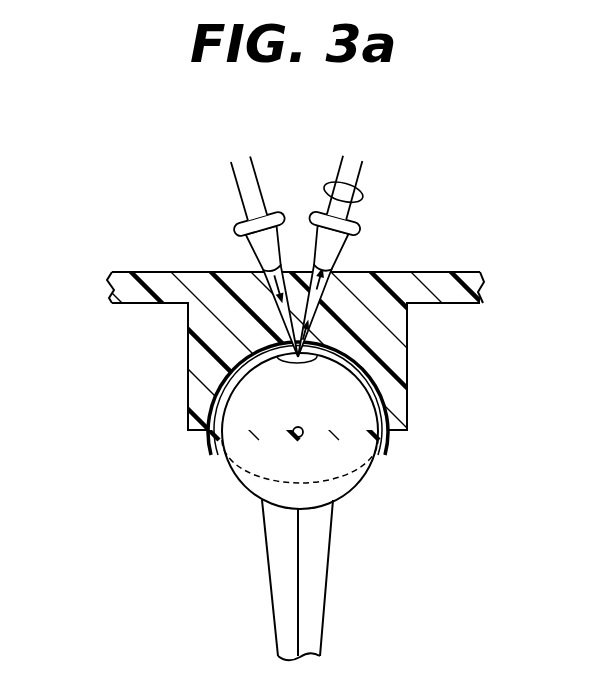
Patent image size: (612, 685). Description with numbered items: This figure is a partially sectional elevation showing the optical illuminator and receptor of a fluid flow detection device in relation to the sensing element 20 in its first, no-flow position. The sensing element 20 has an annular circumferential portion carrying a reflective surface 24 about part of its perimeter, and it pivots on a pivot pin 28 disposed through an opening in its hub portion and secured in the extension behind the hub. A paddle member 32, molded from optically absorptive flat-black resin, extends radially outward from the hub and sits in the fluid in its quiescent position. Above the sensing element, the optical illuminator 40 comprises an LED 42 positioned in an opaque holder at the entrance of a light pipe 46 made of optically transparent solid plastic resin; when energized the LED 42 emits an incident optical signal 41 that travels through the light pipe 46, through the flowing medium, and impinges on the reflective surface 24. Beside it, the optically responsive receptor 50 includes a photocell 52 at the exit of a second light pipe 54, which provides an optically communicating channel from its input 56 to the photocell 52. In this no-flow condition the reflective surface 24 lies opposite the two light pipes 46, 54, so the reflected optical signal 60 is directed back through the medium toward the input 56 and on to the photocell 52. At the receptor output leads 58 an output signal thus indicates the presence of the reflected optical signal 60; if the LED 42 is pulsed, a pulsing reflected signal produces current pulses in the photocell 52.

The sensing element 20 is at (295, 506).
The reflective surface 24 is at (286, 353).
The pivot pin 28 is at (305, 436).
The paddle member 32 is at (327, 597).
The optical illuminator 40 is at (198, 282).
The incident optical signal 41 is at (285, 328).
The LED 42 is at (249, 252).
The light pipe 46 is at (204, 346).
The optically responsive receptor 50 is at (400, 281).
The photocell 52 is at (341, 256).
The second light pipe 54 is at (386, 365).
The input 56 is at (312, 340).
The output leads 58 is at (366, 190).
The reflected optical signal 60 is at (333, 363).